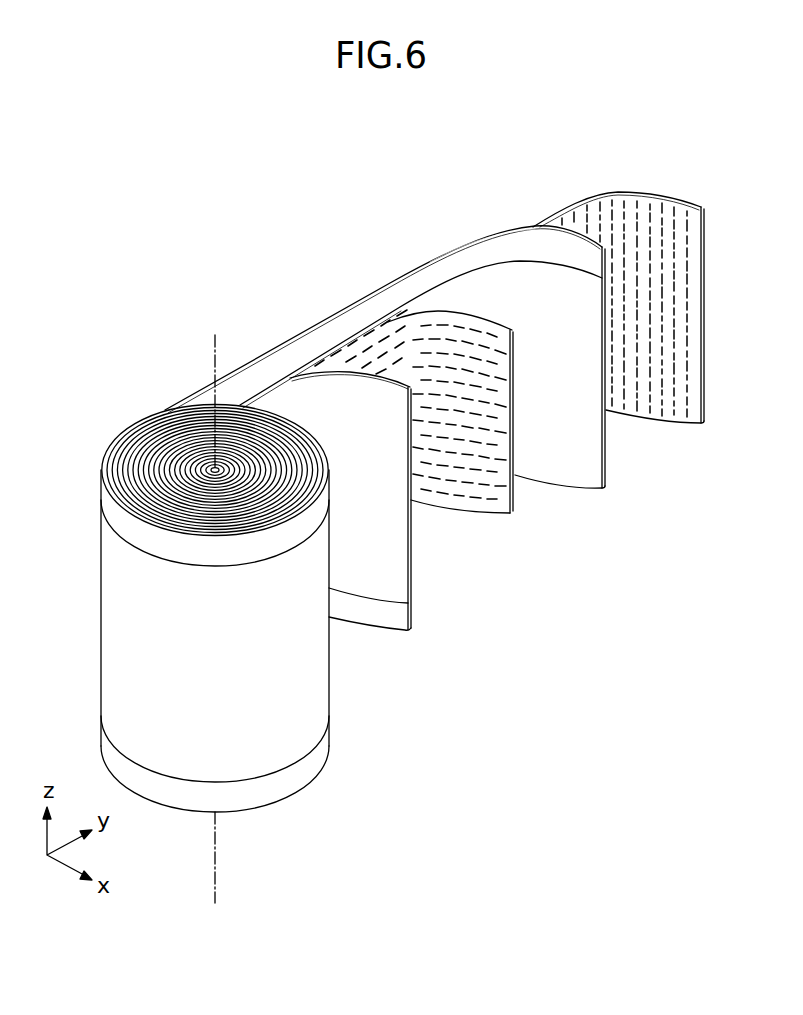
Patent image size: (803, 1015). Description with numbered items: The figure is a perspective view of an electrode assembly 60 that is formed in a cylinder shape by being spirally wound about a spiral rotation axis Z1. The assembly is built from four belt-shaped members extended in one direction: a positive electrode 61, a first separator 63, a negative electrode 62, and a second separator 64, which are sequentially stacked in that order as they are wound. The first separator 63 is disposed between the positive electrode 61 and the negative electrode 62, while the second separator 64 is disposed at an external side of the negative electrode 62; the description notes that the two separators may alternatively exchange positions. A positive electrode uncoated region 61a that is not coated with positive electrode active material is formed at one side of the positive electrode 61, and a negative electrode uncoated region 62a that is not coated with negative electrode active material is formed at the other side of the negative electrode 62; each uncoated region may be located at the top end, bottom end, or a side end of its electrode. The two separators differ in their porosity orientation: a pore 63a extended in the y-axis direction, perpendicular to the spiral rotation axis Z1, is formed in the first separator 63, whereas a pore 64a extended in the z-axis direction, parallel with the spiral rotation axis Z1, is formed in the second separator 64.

The electrode assembly 60 is at (125, 413).
The positive electrode 61 is at (399, 530).
The positive electrode uncoated region 61a is at (410, 628).
The negative electrode 62 is at (385, 320).
The negative electrode uncoated region 62a is at (468, 250).
The first separator 63 is at (410, 351).
The pore 63a is at (418, 330).
The second separator 64 is at (621, 350).
The pore 64a is at (663, 408).
The spiral rotation axis Z1 is at (213, 860).